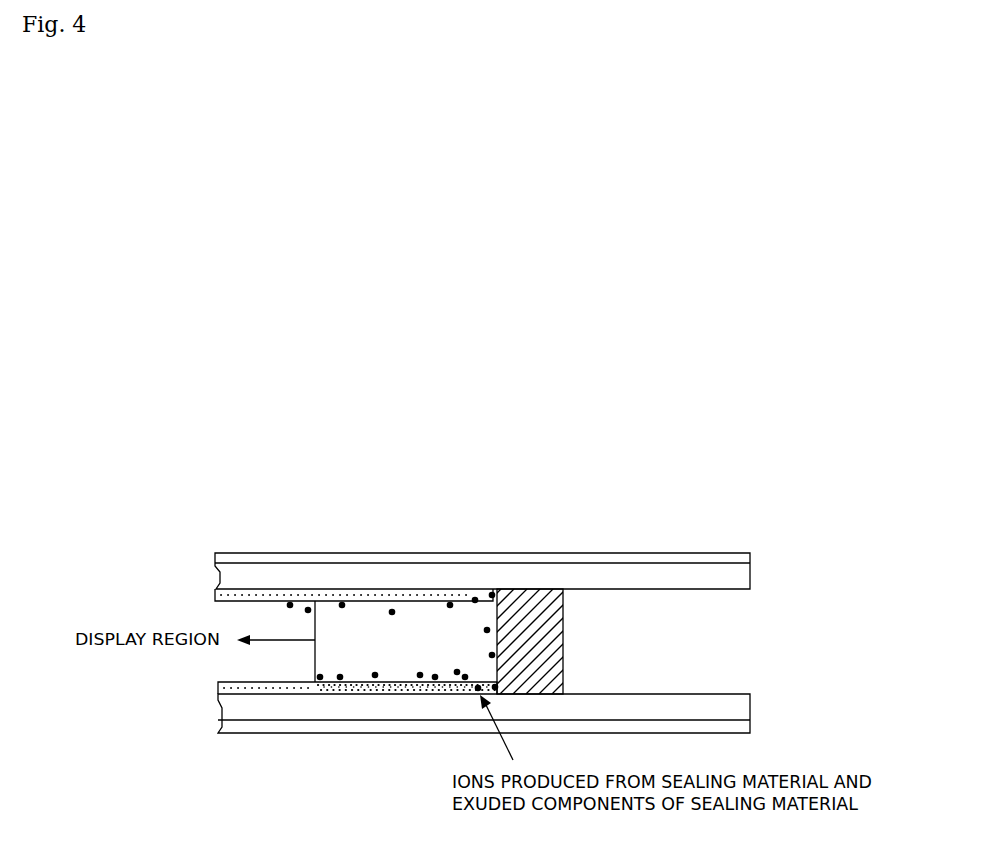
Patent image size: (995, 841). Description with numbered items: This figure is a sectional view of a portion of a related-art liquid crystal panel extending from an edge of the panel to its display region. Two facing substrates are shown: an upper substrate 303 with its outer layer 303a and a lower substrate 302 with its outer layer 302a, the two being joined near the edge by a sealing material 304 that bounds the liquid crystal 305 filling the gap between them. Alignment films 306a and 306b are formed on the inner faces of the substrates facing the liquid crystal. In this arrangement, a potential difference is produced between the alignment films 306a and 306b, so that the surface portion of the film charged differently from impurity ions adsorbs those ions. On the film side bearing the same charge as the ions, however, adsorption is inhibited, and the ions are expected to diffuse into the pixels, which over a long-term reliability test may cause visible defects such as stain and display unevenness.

The lower substrate 302 is at (423, 736).
The lower substrate outer layer 302a is at (222, 727).
The upper substrate 303 is at (416, 553).
The upper substrate outer layer 303a is at (233, 572).
The sealing material 304 is at (538, 637).
The liquid crystal layer 305 is at (457, 642).
The alignment film 306a is at (275, 600).
The alignment film 306b is at (407, 694).